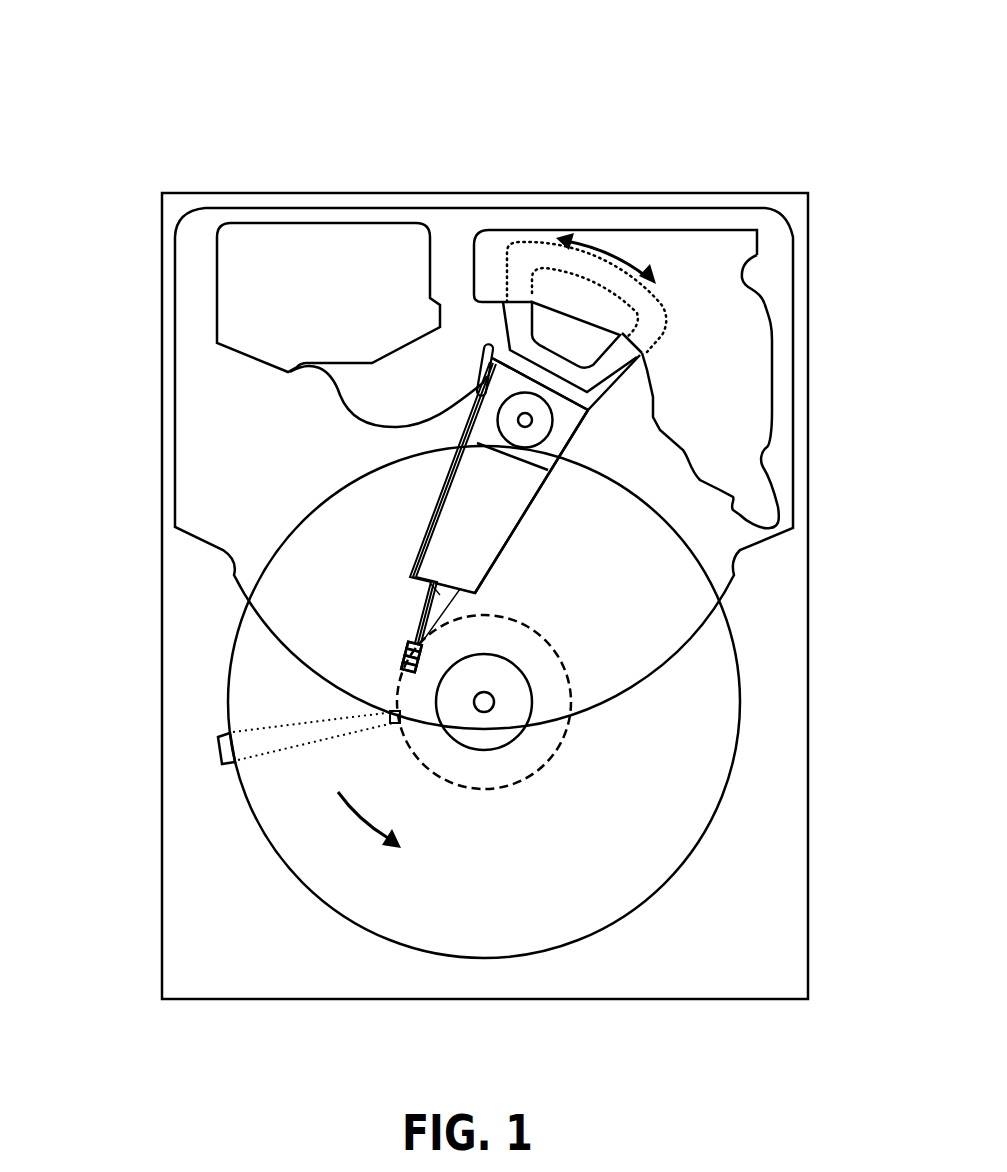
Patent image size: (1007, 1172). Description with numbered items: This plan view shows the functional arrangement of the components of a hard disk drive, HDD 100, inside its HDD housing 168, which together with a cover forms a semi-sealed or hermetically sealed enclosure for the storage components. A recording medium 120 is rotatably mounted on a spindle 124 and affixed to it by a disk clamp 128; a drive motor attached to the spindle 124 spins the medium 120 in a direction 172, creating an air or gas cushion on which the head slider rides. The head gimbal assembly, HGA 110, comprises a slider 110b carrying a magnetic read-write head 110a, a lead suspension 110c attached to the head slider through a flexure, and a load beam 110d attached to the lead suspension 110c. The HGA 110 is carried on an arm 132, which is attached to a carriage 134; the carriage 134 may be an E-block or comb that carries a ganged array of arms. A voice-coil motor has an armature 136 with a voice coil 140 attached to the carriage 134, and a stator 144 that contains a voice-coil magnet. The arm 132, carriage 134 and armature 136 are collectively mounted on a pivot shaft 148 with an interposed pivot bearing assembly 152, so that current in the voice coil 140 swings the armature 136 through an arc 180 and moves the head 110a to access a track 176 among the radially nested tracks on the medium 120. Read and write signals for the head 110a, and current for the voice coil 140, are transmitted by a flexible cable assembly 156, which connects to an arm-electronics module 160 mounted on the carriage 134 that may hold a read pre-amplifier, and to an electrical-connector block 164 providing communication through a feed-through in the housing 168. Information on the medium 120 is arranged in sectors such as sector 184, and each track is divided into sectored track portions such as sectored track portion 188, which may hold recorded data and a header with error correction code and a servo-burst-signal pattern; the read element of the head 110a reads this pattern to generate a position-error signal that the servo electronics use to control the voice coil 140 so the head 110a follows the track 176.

The hard disk drive 100 is at (92, 77).
The head gimbal assembly 110 is at (92, 505).
The magnetic read-write head 110a is at (410, 640).
The slider 110b is at (432, 606).
The lead suspension 110c is at (425, 592).
The load beam 110d is at (420, 575).
The recording medium 120 is at (668, 653).
The spindle 124 is at (486, 701).
The disk clamp 128 is at (510, 718).
The arm 132 is at (477, 535).
The carriage 134 is at (543, 453).
The armature 136 is at (503, 337).
The voice coil 140 is at (520, 313).
The stator 144 is at (737, 323).
The pivot shaft 148 is at (533, 420).
The pivot bearing assembly 152 is at (537, 432).
The flexible cable assembly 156 is at (340, 397).
The arm-electronics module 160 is at (478, 382).
The electrical-connector block 164 is at (242, 295).
The HDD housing 168 is at (790, 205).
The direction 172 is at (393, 818).
The track 176 is at (560, 663).
The arc 180 is at (603, 250).
The sector 184 is at (217, 748).
The sectored track portion 188 is at (390, 716).